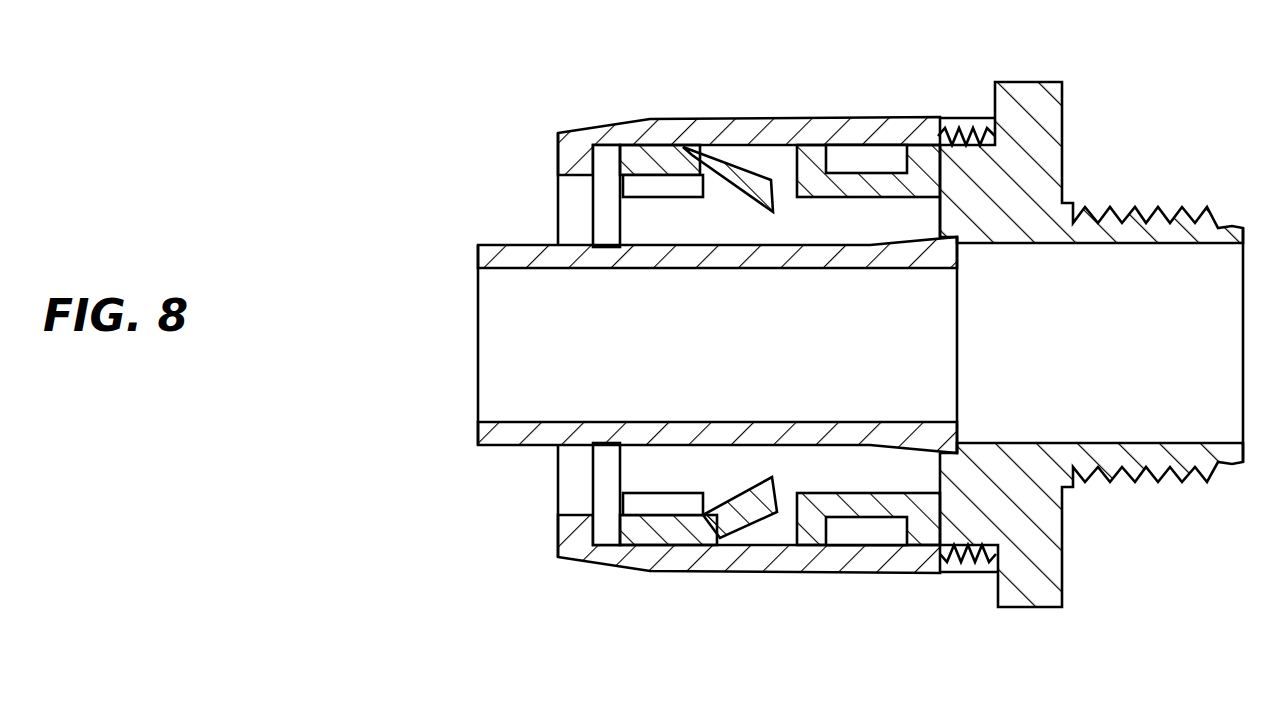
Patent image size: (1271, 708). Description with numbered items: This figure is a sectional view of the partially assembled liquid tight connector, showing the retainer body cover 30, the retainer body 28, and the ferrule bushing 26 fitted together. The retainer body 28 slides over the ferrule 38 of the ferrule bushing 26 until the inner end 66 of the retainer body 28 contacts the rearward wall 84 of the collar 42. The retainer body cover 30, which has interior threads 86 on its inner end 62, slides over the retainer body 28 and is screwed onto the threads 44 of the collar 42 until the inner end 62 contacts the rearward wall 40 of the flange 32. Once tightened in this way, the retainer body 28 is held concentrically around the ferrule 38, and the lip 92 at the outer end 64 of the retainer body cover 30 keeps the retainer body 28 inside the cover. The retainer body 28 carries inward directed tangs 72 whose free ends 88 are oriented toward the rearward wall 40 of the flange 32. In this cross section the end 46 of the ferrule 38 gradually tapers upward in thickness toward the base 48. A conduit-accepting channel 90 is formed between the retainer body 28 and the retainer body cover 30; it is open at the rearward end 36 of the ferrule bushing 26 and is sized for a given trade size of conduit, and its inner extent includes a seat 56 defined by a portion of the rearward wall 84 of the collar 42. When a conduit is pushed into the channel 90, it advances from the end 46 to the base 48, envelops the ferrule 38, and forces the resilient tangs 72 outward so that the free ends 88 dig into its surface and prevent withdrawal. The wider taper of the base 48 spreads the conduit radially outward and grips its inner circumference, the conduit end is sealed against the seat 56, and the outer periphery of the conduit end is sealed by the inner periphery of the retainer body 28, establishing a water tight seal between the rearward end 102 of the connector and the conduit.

The ferrule bushing 26 is at (1030, 172).
The retainer body 28 is at (652, 157).
The retainer body cover 30 is at (697, 562).
The flange 32 is at (1018, 604).
The rearward end 36 is at (661, 345).
The ferrule 38 is at (623, 258).
The rearward wall 40 is at (995, 92).
The collar 42 is at (965, 520).
The threads 44 is at (937, 573).
The end 46 is at (548, 268).
The base 48 is at (893, 270).
The seat 56 is at (938, 209).
The inner end 62 is at (995, 128).
The outer end 64 is at (560, 535).
The inner end 66 is at (930, 527).
The inward directed tangs 72 is at (730, 168).
The rearward wall 84 is at (895, 535).
The interior threads 86 is at (915, 88).
The free ends 88 is at (767, 477).
The conduit-accepting channel 90 is at (637, 219).
The lip 92 is at (587, 545).
The rearward end 102 is at (478, 372).